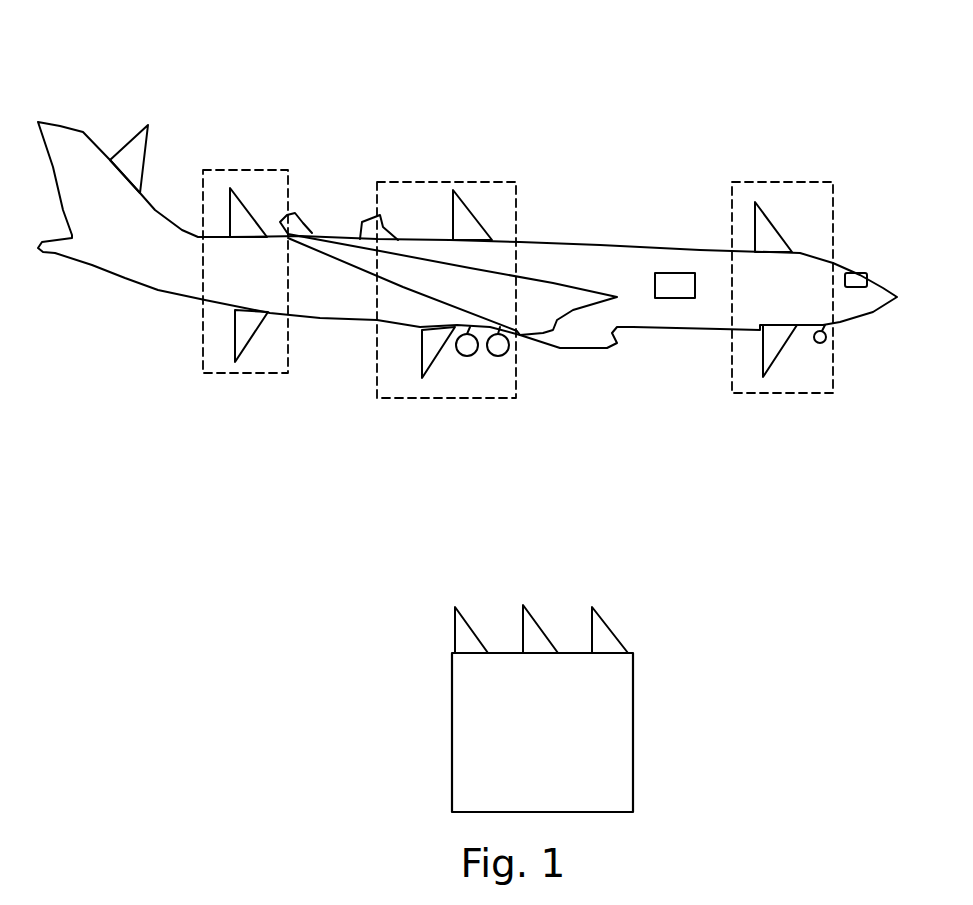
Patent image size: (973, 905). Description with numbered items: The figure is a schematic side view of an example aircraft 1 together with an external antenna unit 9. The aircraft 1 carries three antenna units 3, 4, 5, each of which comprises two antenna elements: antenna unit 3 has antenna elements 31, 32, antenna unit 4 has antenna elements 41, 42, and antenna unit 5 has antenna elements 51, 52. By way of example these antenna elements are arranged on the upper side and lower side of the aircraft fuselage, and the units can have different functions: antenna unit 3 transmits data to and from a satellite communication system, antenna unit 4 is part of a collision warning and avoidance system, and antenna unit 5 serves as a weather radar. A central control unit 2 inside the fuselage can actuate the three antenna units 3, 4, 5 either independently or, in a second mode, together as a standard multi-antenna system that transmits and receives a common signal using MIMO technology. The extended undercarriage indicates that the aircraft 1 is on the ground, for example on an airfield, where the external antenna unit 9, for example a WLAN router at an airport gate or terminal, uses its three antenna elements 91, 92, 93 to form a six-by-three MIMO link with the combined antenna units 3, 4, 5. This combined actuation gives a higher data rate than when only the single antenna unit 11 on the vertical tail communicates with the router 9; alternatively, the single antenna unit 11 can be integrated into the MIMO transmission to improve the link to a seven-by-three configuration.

The aircraft 1 is at (58, 122).
The single antenna unit 11 is at (137, 133).
The central control unit 2 is at (675, 273).
The antenna unit 3 is at (208, 171).
The antenna element 31 is at (238, 197).
The antenna element 32 is at (247, 350).
The antenna unit 4 is at (435, 182).
The antenna element 41 is at (473, 210).
The antenna element 42 is at (433, 367).
The antenna unit 5 is at (737, 182).
The antenna element 51 is at (777, 223).
The antenna element 52 is at (777, 357).
The external antenna unit 9 is at (450, 722).
The antenna element 91 is at (465, 618).
The antenna element 92 is at (533, 618).
The antenna element 93 is at (600, 618).